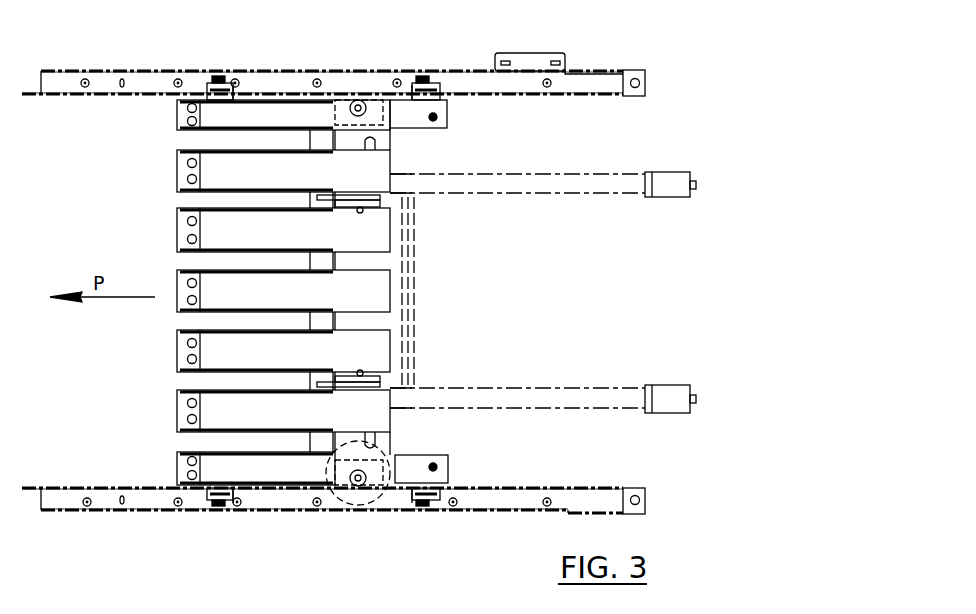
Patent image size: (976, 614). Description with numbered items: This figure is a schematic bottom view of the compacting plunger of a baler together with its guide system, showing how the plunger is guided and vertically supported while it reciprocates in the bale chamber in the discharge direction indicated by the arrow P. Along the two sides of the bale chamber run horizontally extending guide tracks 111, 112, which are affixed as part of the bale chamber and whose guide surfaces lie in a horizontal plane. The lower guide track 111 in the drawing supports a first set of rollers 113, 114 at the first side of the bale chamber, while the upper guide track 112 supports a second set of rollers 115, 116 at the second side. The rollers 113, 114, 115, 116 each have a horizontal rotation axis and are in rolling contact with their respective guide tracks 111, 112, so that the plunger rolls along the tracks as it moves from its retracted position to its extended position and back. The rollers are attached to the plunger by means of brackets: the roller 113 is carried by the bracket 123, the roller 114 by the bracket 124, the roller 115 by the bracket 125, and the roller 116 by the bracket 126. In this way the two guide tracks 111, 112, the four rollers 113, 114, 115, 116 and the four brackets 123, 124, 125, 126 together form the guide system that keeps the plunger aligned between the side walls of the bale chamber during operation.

The guide track 111 is at (56, 505).
The guide track 112 is at (60, 82).
The roller 113 is at (210, 505).
The roller 114 is at (437, 503).
The roller 115 is at (203, 88).
The roller 116 is at (435, 85).
The bracket 123 is at (235, 500).
The bracket 124 is at (400, 500).
The bracket 125 is at (233, 90).
The bracket 126 is at (410, 90).